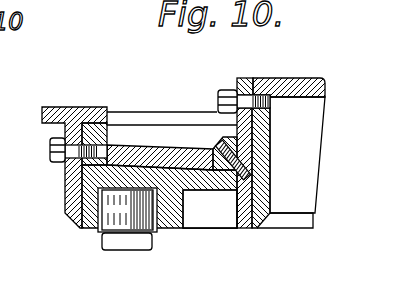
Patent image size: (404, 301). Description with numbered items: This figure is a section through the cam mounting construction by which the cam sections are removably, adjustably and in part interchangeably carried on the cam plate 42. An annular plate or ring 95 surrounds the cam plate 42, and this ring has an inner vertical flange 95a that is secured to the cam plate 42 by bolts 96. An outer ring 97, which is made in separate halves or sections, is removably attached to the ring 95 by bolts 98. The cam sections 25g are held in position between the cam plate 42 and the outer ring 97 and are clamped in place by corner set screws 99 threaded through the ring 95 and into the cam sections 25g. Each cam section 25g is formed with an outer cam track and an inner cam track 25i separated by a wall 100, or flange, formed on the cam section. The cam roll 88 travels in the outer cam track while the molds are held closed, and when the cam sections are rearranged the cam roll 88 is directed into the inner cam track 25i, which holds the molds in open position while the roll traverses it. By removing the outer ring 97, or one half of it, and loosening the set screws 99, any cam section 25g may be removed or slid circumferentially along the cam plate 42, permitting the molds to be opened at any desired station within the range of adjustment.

The cam plate 42 is at (303, 79).
The cam roll 88 is at (117, 220).
The annular plate or ring 95 is at (140, 152).
The inner vertical flange 95a is at (247, 73).
The bolts 96 is at (218, 96).
The outer ring 97 is at (72, 101).
The bolts 98 is at (50, 148).
The corner set screws 99 is at (245, 155).
The wall 100 is at (173, 222).
The cam sections 25g is at (210, 190).
The inner cam track 25i is at (236, 224).